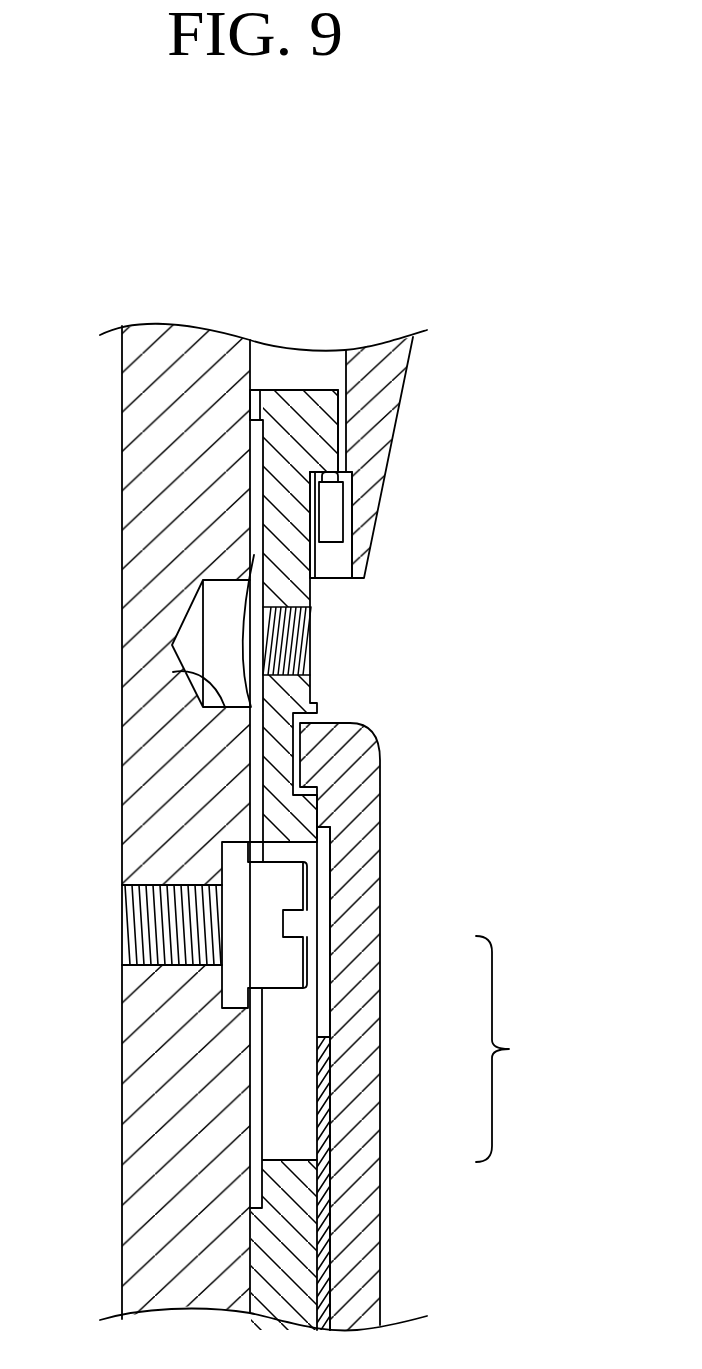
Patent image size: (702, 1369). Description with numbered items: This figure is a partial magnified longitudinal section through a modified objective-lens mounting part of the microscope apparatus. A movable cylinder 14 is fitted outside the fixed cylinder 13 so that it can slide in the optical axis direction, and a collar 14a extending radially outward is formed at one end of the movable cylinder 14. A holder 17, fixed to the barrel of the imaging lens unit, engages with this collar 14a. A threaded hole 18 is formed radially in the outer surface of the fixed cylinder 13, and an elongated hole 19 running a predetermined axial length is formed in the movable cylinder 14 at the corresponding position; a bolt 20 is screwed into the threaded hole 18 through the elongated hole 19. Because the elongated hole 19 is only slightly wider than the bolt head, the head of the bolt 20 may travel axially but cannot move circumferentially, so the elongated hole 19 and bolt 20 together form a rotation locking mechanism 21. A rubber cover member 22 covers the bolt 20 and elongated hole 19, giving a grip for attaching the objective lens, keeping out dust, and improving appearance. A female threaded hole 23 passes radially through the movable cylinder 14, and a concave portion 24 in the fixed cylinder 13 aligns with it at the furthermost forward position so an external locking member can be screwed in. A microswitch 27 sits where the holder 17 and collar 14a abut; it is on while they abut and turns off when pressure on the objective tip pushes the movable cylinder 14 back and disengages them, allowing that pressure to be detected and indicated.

The fixed cylinder 13 is at (142, 1146).
The movable cylinder 14 is at (300, 1190).
The collar 14a is at (322, 447).
The holder 17 is at (408, 363).
The threaded hole 18 is at (118, 950).
The elongated hole 19 is at (300, 1160).
The bolt 20 is at (287, 969).
The rotation locking mechanism 21 is at (512, 1049).
The cover member 22 is at (380, 822).
The female threaded hole 23 is at (308, 660).
The concave portion 24 is at (173, 670).
The microswitch 27 is at (338, 513).